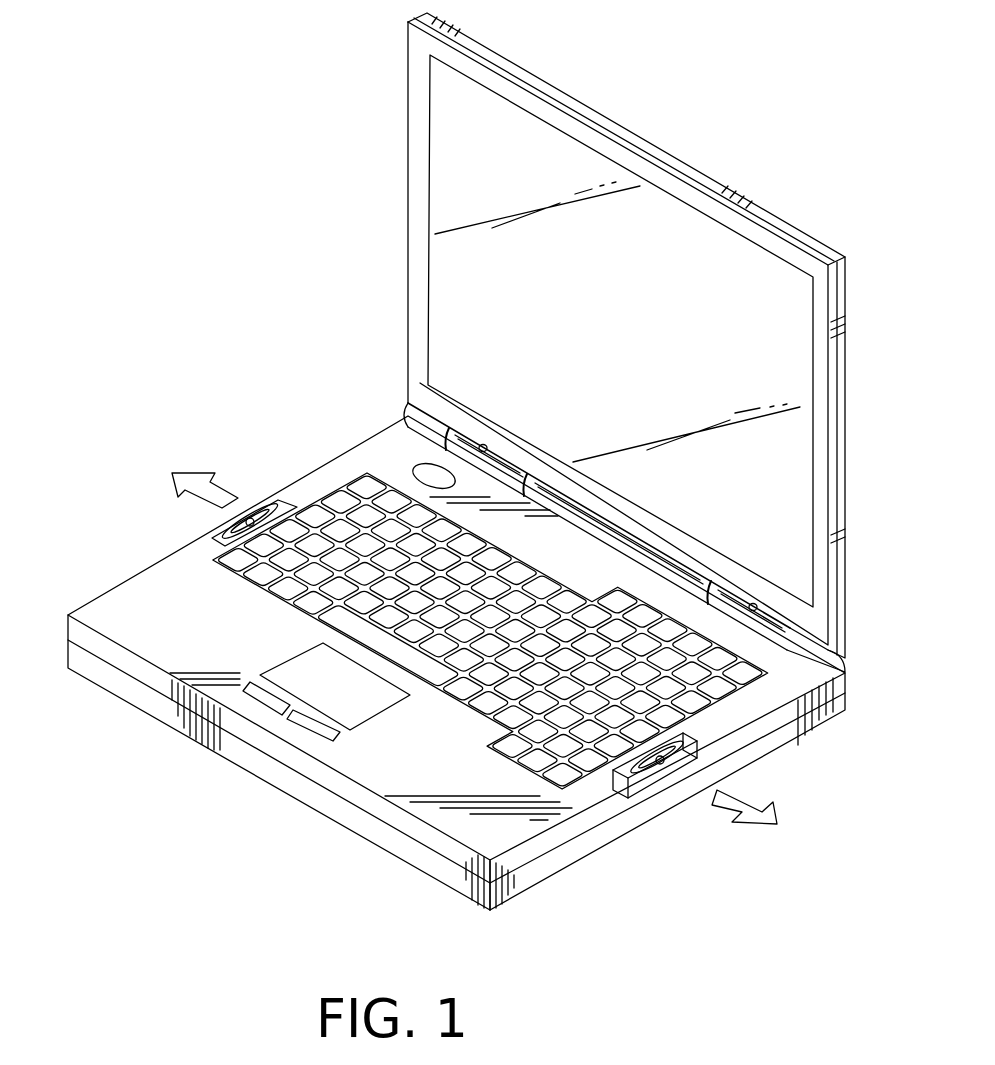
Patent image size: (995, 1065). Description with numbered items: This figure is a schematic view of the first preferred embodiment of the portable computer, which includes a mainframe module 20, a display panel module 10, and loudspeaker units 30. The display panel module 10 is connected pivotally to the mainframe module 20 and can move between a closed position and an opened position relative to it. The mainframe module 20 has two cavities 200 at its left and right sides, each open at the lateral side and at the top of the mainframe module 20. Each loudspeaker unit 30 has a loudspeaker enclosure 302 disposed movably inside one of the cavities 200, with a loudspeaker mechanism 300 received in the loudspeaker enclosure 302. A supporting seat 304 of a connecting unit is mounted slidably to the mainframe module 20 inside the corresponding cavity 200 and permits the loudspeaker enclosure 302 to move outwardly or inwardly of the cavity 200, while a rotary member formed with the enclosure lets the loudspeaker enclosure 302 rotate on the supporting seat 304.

The display panel module 10 is at (415, 200).
The mainframe module 20 is at (130, 610).
The loudspeaker unit 30 is at (272, 493).
The cavity 200 is at (705, 748).
The loudspeaker mechanism 300 is at (710, 768).
The loudspeaker enclosure 302 is at (685, 782).
The supporting seat 304 is at (657, 768).